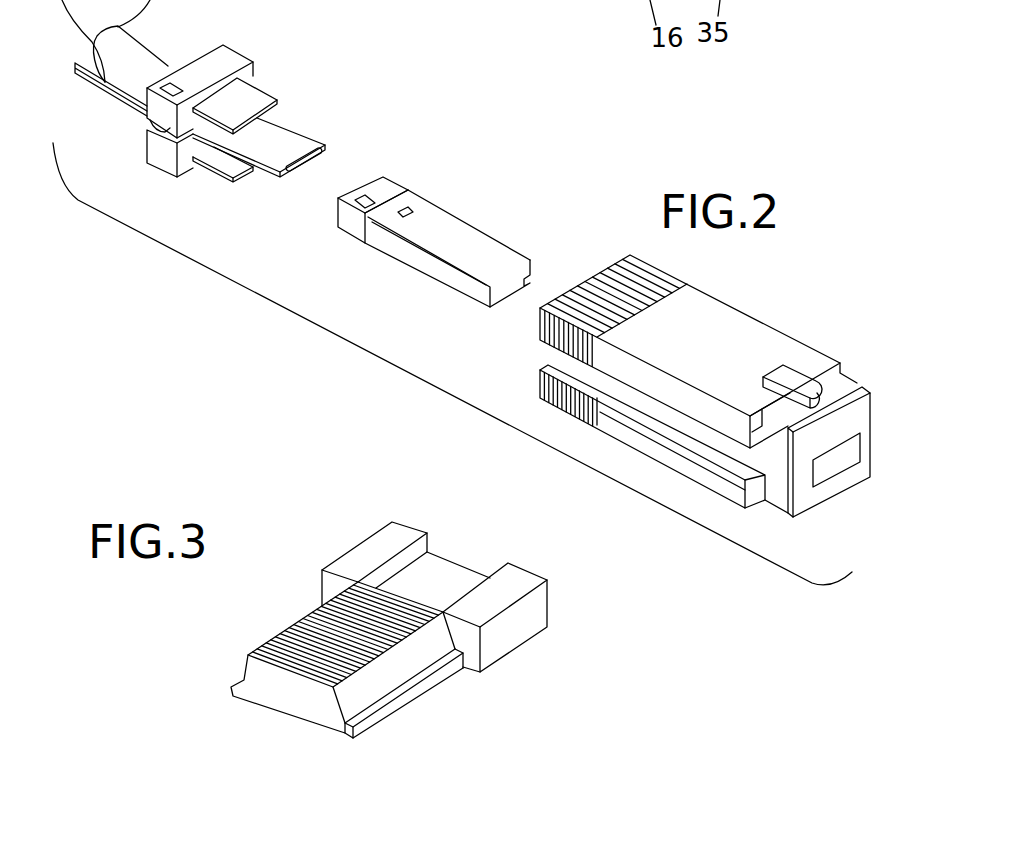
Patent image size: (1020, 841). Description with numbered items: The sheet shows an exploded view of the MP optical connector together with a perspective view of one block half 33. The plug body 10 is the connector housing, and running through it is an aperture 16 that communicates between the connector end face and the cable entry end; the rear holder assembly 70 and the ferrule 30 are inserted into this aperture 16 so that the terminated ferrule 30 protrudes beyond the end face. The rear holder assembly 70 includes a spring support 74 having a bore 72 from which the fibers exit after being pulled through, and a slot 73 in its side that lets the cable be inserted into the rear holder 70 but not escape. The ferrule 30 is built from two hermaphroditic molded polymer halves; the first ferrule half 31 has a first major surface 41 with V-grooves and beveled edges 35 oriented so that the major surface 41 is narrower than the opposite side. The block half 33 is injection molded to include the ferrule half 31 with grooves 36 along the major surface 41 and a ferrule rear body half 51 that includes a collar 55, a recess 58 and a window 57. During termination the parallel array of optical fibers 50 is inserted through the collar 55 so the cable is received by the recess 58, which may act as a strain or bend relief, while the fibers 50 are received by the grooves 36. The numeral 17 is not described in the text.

In FIG. 2, the plug body 10 is at (755, 285).
In FIG. 2, the aperture 16 is at (838, 467).
In FIG. 2, the housing portion 17 is at (573, 0).
In FIG. 2, the ferrule 30 is at (515, 206).
In FIG. 3, the first ferrule half 31 is at (246, 643).
In FIG. 3, the block half 33 is at (502, 682).
In FIG. 3, the beveled edges 35 is at (388, 677).
In FIG. 3, the grooves 36 is at (266, 683).
In FIG. 3, the first major surface 41 is at (300, 626).
In FIG. 2, the optical fibers 50 is at (789, 12).
In FIG. 3, the ferrule rear body half 51 is at (329, 550).
In FIG. 2, the collar 55 is at (418, 193).
In FIG. 3, the collar 55 is at (375, 548).
In FIG. 2, the window 57 is at (427, 198).
In FIG. 3, the recess 58 is at (447, 577).
In FIG. 2, the rear holder assembly 70 is at (279, 91).
In FIG. 2, the bore 72 is at (302, 175).
In FIG. 2, the slot 73 is at (168, 133).
In FIG. 2, the spring support 74 is at (220, 176).